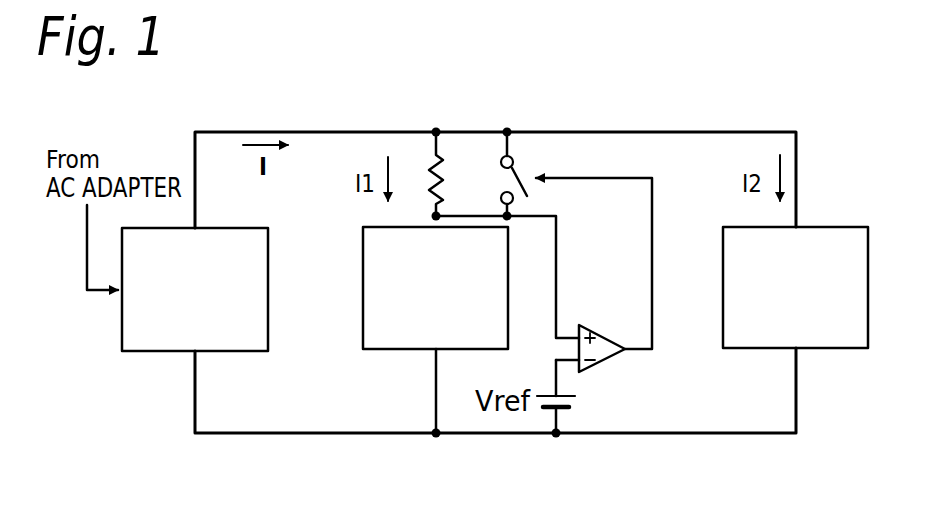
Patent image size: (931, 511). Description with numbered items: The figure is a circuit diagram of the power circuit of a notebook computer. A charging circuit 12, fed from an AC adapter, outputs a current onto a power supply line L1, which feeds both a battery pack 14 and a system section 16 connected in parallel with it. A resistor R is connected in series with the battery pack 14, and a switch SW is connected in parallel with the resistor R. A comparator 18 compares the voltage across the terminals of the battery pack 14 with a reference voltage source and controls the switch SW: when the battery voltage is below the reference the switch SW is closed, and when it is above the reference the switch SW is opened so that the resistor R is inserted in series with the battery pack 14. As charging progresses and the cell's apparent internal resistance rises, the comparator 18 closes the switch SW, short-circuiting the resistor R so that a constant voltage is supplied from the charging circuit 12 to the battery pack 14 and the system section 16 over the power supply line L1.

The charging circuit 12 is at (145, 351).
The battery pack 14 is at (385, 349).
The system section 16 is at (760, 348).
The comparator 18 is at (594, 364).
The power supply line L1 is at (600, 132).
The resistor R is at (426, 174).
The switch SW is at (498, 174).